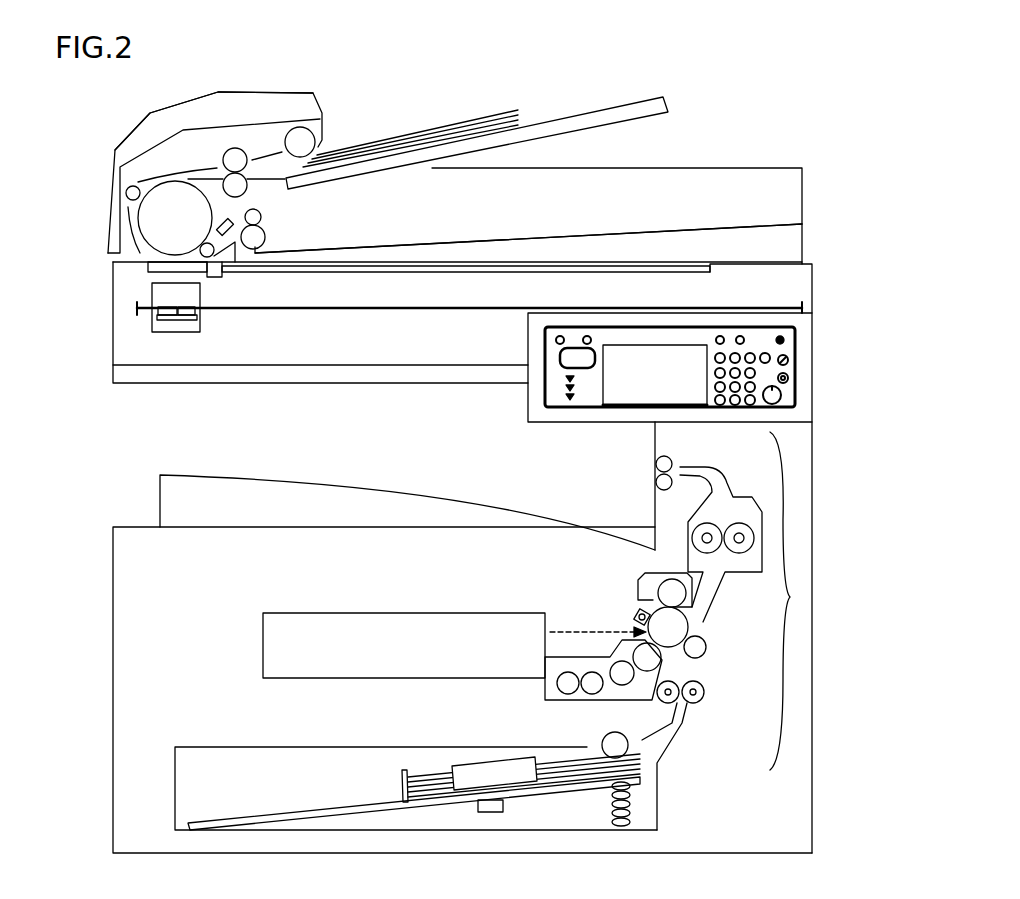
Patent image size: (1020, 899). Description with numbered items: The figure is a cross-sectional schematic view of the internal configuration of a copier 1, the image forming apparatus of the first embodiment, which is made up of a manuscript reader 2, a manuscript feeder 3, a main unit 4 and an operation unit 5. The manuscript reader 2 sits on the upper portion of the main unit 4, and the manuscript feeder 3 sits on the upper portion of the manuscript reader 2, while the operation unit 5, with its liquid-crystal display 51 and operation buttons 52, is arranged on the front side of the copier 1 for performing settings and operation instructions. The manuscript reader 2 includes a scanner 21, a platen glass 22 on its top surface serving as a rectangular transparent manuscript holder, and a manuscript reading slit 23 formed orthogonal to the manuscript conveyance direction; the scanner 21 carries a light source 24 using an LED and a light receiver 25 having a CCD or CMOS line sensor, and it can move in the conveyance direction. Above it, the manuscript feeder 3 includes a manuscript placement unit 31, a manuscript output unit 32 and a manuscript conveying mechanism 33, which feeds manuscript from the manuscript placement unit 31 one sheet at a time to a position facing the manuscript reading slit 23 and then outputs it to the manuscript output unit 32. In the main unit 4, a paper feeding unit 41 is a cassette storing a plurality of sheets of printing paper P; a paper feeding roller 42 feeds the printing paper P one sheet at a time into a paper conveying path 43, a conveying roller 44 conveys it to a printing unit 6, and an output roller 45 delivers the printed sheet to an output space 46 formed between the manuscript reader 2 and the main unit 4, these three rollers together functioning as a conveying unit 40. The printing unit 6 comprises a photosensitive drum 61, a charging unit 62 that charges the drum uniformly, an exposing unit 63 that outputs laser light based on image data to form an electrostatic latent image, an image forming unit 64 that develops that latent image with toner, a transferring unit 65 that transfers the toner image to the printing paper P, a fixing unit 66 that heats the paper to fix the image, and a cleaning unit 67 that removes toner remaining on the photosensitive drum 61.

The copier 1 is at (734, 64).
The manuscript reader 2 is at (95, 318).
The manuscript feeder 3 is at (95, 191).
The main unit 4 is at (95, 607).
The operation unit 5 is at (880, 305).
The printing unit 6 is at (546, 594).
The scanner 21 is at (200, 332).
The platen glass 22 is at (433, 268).
The manuscript reading slit 23 is at (148, 267).
The light source 24 is at (160, 310).
The light receiver 25 is at (193, 308).
The manuscript placement unit 31 is at (635, 99).
The manuscript output unit 32 is at (248, 92).
The manuscript conveying mechanism 33 is at (545, 240).
The conveying unit 40 is at (793, 601).
The paper feeding unit 41 is at (655, 788).
The paper feeding roller 42 is at (628, 747).
The paper conveying path 43 is at (668, 717).
The conveying roller 44 is at (707, 690).
The output roller 45 is at (672, 463).
The output space 46 is at (383, 488).
The liquid-crystal display 51 is at (690, 357).
The operation buttons 52 is at (748, 368).
The photosensitive drum 61 is at (677, 625).
The charging unit 62 is at (638, 612).
The exposing unit 63 is at (305, 655).
The image forming unit 64 is at (545, 690).
The transferring unit 65 is at (703, 648).
The fixing unit 66 is at (687, 533).
The cleaning unit 67 is at (643, 575).
The printing paper P is at (437, 770).